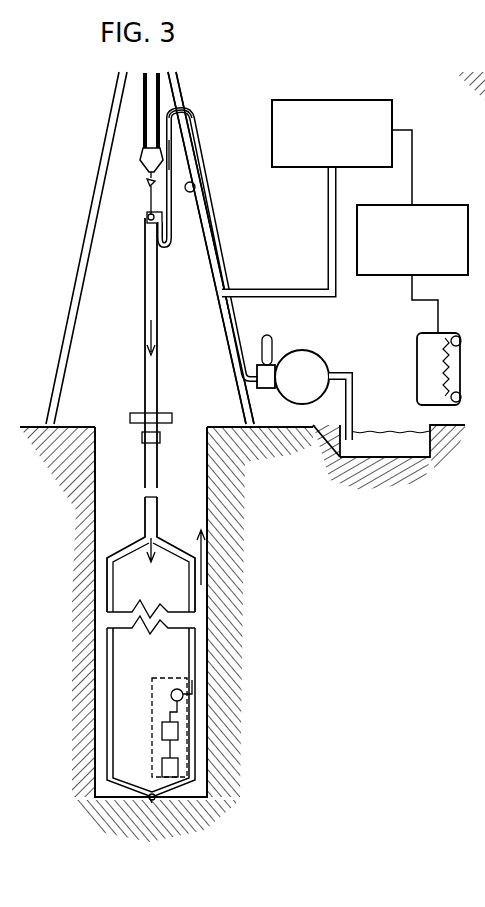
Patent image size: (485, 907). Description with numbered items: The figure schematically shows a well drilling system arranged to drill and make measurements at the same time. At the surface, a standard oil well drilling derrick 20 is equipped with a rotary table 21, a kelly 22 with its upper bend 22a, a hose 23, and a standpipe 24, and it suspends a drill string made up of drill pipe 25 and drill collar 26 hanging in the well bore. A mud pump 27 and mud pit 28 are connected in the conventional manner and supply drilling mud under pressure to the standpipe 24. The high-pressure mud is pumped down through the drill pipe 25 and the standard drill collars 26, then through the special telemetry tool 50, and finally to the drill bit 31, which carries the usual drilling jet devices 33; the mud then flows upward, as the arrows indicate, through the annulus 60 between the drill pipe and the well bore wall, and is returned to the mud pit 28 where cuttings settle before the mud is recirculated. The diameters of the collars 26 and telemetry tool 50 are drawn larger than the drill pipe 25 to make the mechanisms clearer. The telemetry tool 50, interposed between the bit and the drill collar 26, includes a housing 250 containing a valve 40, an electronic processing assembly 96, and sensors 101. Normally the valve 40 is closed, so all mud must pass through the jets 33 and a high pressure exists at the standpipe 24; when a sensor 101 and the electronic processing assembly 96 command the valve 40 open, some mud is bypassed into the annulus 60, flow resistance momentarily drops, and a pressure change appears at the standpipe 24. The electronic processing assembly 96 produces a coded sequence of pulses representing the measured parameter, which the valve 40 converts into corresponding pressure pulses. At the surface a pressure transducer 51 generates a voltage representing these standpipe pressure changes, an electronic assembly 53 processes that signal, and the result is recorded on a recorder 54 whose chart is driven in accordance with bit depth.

The oil well drilling derrick 20 is at (183, 102).
The rotary table 21 is at (168, 414).
The kelly 22 is at (152, 258).
The hose hairpin bend 22a is at (172, 133).
The hose 23 is at (170, 160).
The standpipe 24 is at (196, 186).
The drill pipe 25 is at (158, 470).
The drill collar 26 is at (197, 608).
The mud pump 27 is at (308, 365).
The mud pit 28 is at (372, 445).
The drill bit 31 is at (207, 797).
The drilling jet devices 33 is at (155, 800).
The valve 40 is at (171, 693).
The telemetry tool 50 is at (192, 680).
The pressure transducer 51 is at (296, 100).
The electronic assembly 53 is at (381, 205).
The recorder 54 is at (418, 356).
The annulus 60 is at (105, 747).
The electronic processing assembly 96 is at (162, 733).
The sensors 101 is at (162, 766).
The housing 250 is at (157, 670).